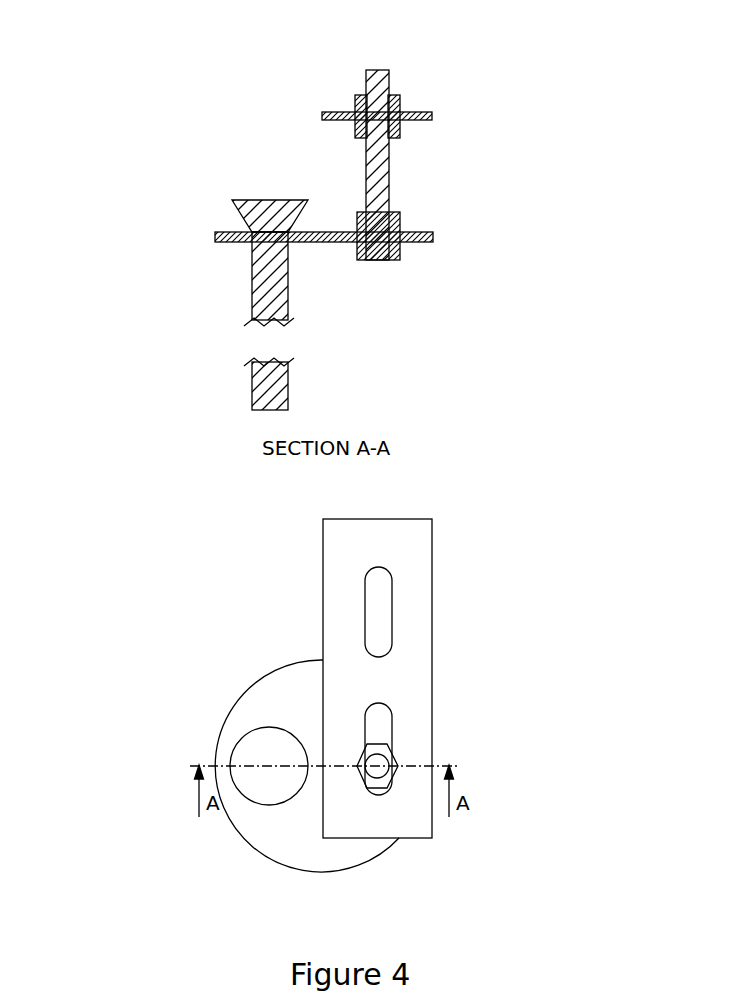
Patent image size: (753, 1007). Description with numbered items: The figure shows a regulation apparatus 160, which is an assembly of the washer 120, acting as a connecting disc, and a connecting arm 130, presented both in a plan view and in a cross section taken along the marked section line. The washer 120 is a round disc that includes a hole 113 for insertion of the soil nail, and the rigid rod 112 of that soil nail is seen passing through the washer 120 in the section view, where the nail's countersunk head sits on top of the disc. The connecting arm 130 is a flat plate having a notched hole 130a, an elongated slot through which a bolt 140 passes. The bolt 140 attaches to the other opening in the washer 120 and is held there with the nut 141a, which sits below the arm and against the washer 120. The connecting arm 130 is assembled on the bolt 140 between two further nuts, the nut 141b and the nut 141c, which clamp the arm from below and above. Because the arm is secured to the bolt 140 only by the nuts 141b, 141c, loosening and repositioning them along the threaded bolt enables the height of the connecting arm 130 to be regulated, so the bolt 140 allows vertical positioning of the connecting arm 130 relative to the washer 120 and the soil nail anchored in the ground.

The rigid rod 112 is at (240, 279).
The hole 113 is at (249, 747).
The washer 120 is at (217, 224).
The connecting arm 130 is at (325, 109).
The notched hole 130a is at (387, 628).
The bolt 140 is at (400, 172).
The nut 141a is at (403, 218).
The nut 141b is at (410, 127).
The nut 141c is at (410, 99).
The regulation apparatus 160 is at (390, 290).